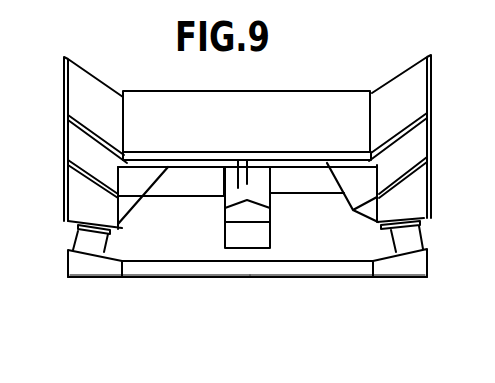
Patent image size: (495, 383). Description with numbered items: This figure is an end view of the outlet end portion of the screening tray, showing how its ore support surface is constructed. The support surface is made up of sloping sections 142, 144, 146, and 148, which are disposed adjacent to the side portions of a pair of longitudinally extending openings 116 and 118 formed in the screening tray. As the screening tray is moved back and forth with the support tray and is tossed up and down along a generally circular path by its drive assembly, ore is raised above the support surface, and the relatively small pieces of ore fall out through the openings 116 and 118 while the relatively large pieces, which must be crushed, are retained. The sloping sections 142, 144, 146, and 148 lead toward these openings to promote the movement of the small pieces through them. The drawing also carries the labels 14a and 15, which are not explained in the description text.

The front plate of upper housing 14a is at (157, 151).
The side wall panel 15 is at (400, 136).
The sloping section 146 is at (238, 159).
The sloping section 144 is at (257, 186).
The sloping section 148 is at (136, 190).
The sloping section 142 is at (354, 178).
The longitudinally extending opening 118 is at (173, 242).
The longitudinally extending opening 116 is at (313, 238).